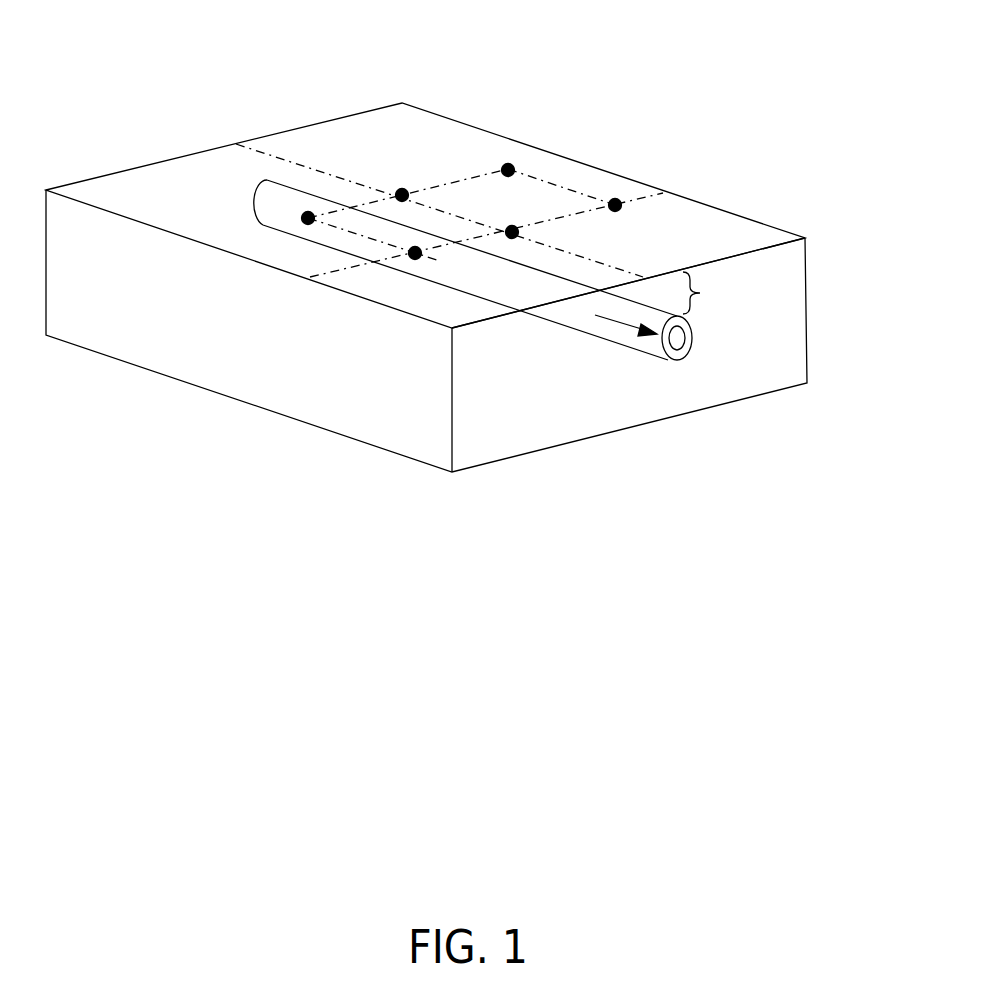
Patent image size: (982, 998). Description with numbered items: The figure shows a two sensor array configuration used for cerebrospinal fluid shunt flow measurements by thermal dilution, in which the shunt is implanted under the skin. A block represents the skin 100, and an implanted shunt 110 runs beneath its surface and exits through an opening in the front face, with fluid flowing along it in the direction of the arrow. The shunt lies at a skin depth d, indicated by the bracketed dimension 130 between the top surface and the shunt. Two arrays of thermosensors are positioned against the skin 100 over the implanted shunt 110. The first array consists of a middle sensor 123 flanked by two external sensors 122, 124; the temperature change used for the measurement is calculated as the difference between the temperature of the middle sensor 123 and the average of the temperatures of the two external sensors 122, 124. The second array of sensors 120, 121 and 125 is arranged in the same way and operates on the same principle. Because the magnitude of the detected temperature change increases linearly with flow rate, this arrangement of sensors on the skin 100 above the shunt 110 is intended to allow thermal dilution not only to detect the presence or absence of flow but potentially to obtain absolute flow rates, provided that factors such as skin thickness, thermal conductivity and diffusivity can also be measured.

The skin 100 is at (787, 327).
The implanted shunt 110 is at (675, 362).
The sensor of the second array 120 is at (615, 205).
The sensor of the second array 121 is at (512, 232).
The external sensor 122 is at (508, 170).
The middle sensor 123 is at (402, 195).
The external sensor 124 is at (308, 218).
The sensor of the second array 125 is at (415, 253).
The skin depth d 130 is at (725, 308).